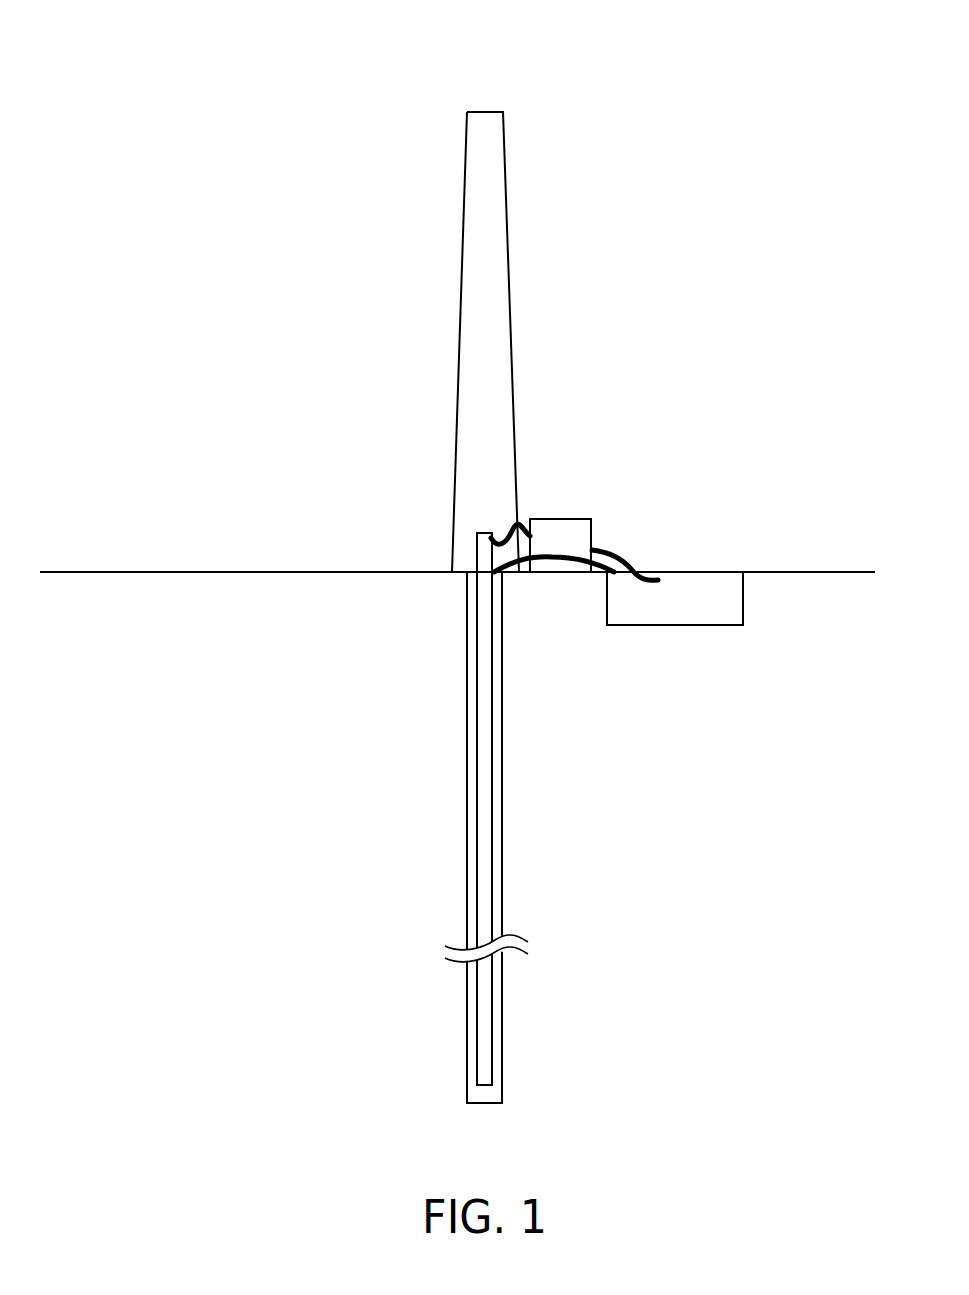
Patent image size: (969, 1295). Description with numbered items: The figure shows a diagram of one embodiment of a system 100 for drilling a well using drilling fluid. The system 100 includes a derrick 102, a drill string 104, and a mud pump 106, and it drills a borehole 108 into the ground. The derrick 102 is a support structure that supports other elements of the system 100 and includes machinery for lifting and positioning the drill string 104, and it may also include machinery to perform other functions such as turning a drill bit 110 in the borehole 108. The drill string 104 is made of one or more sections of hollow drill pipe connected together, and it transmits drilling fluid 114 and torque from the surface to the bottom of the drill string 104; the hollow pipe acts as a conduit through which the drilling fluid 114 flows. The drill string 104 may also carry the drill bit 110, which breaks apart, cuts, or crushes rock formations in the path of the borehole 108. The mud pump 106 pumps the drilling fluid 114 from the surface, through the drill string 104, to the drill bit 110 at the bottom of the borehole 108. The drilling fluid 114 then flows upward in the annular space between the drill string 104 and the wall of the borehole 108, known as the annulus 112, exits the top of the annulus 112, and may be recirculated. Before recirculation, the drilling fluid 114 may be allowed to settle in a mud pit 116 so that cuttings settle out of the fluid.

The system 100 is at (267, 52).
The derrick 102 is at (460, 320).
The drill string 104 is at (477, 616).
The mud pump 106 is at (592, 545).
The borehole 108 is at (467, 713).
The drill bit 110 is at (492, 1085).
The annulus 112 is at (497, 723).
The drilling fluid 114 is at (642, 581).
The mud pit 116 is at (743, 607).